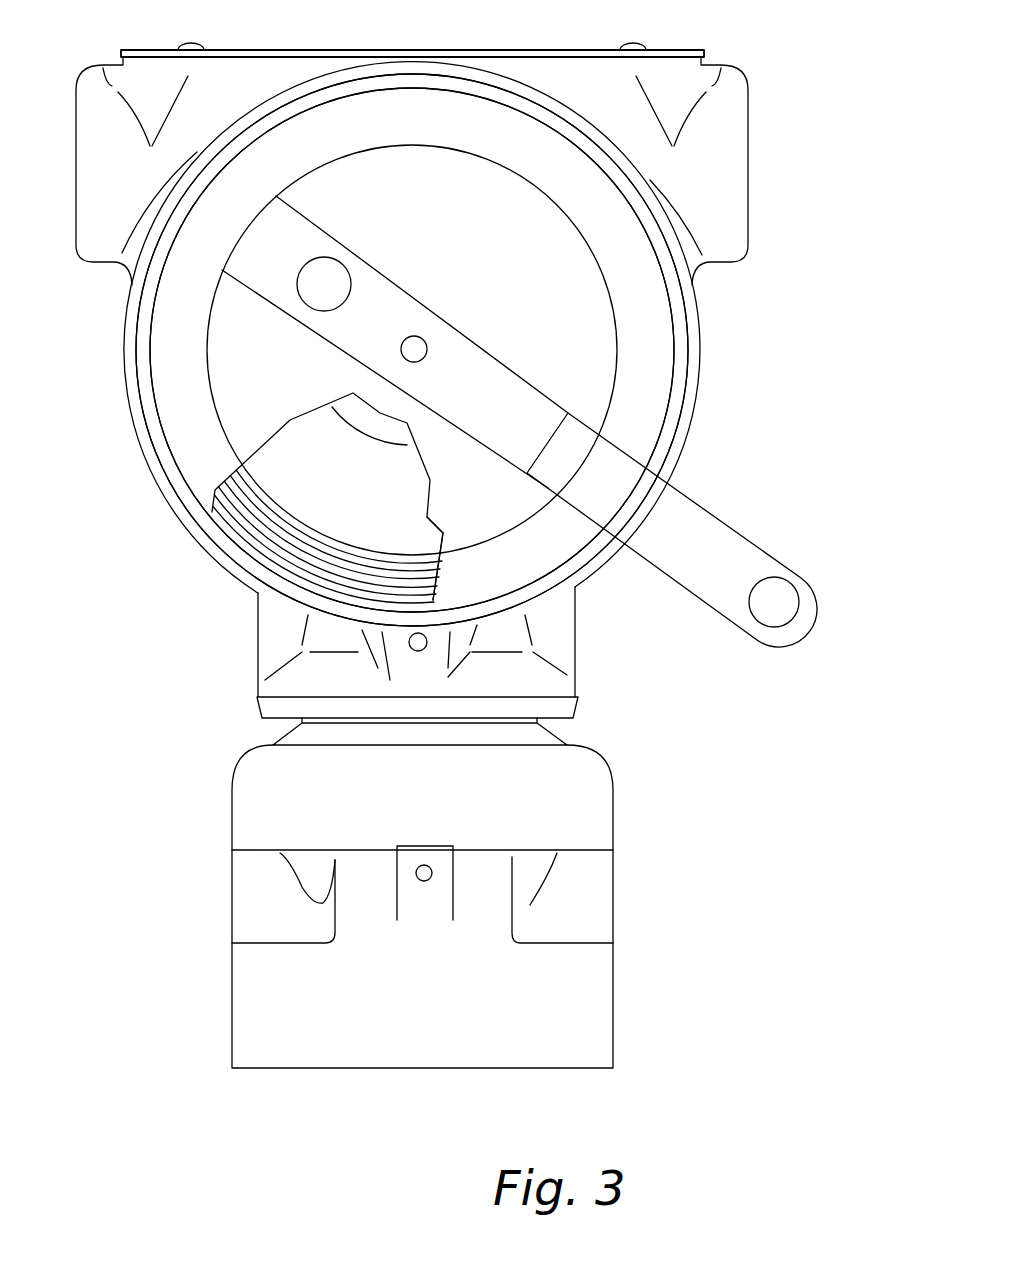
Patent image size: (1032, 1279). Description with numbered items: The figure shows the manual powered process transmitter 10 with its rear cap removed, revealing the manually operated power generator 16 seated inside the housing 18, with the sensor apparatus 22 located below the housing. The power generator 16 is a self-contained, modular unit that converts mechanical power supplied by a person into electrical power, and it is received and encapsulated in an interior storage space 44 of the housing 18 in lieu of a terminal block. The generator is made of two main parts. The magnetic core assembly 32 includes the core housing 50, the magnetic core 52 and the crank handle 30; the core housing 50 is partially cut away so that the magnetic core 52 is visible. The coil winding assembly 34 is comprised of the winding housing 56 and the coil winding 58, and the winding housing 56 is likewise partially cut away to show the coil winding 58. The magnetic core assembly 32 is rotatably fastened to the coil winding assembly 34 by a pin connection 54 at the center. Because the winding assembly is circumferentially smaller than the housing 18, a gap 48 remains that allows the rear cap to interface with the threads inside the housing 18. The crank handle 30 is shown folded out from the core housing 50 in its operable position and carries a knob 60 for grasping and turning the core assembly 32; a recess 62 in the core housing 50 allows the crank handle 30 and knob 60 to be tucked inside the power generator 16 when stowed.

The process transmitter 10 is at (795, 141).
The manually operated power generator 16 is at (152, 451).
The housing 18 is at (132, 285).
The sensor apparatus 22 is at (598, 1005).
The crank handle 30 is at (720, 540).
The magnetic core assembly 32 is at (247, 393).
The coil winding assembly 34 is at (652, 343).
The interior storage space 44 is at (593, 548).
The gap 48 is at (677, 381).
The core housing 50 is at (480, 498).
The magnetic core 52 is at (313, 492).
The pin connection 54 is at (414, 349).
The winding housing 56 is at (494, 570).
The coil winding 58 is at (330, 538).
The knob 60 is at (775, 600).
The recess 62 is at (324, 284).